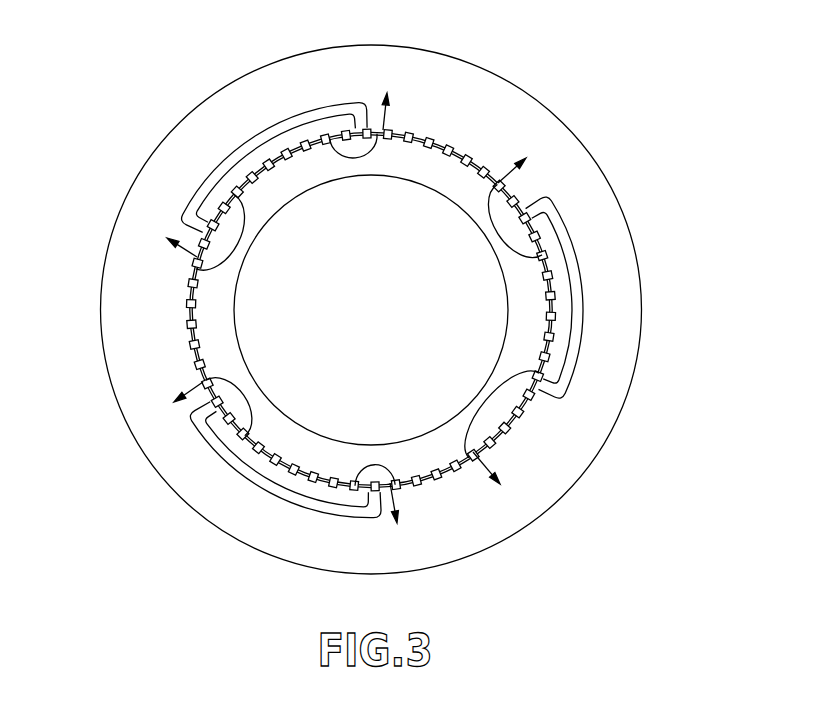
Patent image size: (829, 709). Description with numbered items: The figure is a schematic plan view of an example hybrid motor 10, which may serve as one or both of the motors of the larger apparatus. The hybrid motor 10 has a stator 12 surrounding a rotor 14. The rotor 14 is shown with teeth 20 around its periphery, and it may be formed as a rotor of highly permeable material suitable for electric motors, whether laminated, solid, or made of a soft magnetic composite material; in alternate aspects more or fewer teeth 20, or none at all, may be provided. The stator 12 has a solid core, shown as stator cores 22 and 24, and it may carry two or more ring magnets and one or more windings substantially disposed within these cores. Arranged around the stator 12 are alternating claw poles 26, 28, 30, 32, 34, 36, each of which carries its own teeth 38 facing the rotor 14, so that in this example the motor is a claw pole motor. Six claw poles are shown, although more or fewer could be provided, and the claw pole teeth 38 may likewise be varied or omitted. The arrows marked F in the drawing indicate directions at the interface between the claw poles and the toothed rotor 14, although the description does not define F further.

The hybrid motor 10 is at (604, 86).
The stator 12 is at (652, 319).
The rotor 14 is at (414, 462).
The teeth 20 is at (480, 452).
The stator core 22 is at (617, 223).
The stator core 24 is at (562, 285).
The claw pole 26 is at (433, 140).
The claw pole 28 is at (302, 132).
The claw pole 30 is at (190, 337).
The claw pole 32 is at (320, 490).
The claw pole 34 is at (477, 490).
The claw pole 36 is at (565, 349).
The teeth 38 is at (480, 453).
The force direction F is at (243, 400).